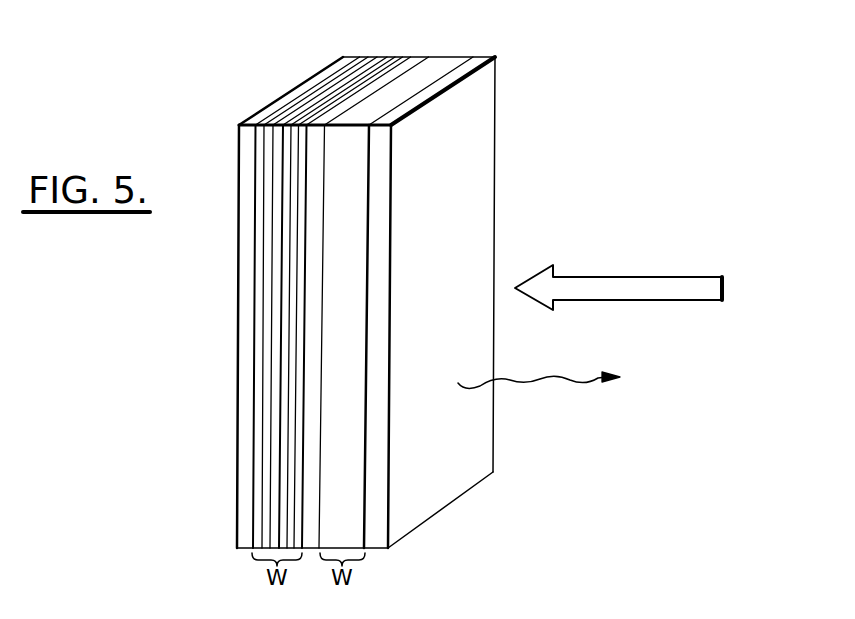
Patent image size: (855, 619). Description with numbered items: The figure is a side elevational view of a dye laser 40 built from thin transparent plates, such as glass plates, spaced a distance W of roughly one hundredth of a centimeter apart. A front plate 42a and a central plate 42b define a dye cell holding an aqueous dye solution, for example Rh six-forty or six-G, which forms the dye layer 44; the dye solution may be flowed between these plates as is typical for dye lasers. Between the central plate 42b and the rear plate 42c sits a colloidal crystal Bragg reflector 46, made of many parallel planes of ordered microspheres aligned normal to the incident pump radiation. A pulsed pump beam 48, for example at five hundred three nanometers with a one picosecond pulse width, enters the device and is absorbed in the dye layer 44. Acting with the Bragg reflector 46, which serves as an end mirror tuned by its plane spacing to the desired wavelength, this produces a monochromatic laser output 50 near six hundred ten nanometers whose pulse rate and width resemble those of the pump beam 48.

The dye laser 40 is at (212, 432).
The transparent plate 42a is at (482, 58).
The central plate 42b is at (420, 57).
The rear plate 42c is at (355, 57).
The dye layer 44 is at (352, 505).
The colloidal crystal Bragg reflector 46 is at (280, 332).
The pump beam 48 is at (650, 275).
The laser output 50 is at (547, 380).